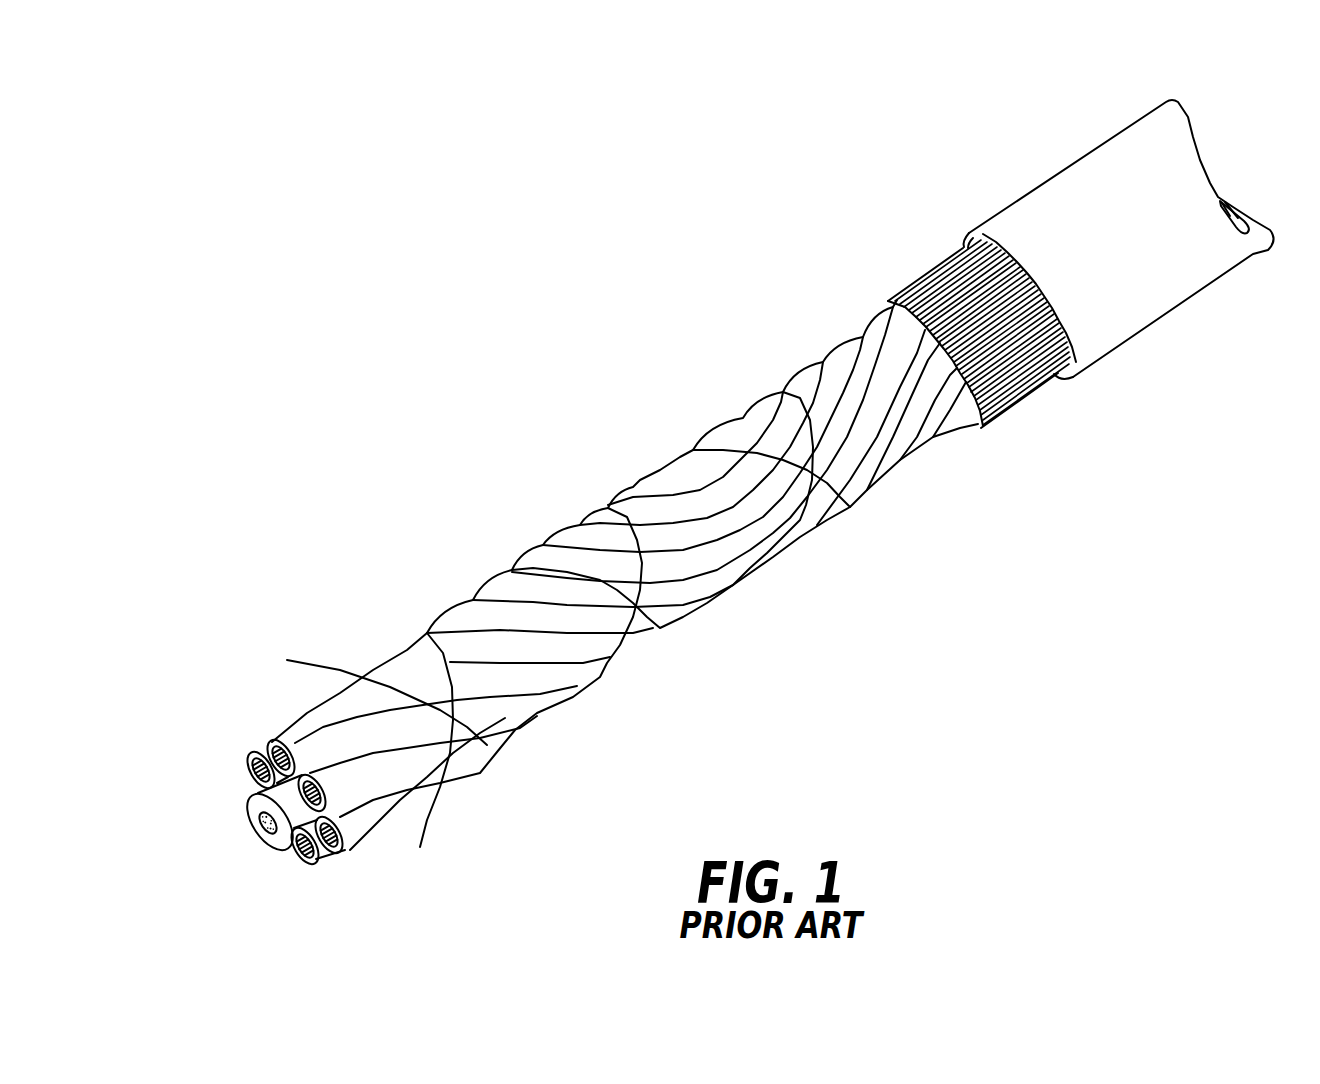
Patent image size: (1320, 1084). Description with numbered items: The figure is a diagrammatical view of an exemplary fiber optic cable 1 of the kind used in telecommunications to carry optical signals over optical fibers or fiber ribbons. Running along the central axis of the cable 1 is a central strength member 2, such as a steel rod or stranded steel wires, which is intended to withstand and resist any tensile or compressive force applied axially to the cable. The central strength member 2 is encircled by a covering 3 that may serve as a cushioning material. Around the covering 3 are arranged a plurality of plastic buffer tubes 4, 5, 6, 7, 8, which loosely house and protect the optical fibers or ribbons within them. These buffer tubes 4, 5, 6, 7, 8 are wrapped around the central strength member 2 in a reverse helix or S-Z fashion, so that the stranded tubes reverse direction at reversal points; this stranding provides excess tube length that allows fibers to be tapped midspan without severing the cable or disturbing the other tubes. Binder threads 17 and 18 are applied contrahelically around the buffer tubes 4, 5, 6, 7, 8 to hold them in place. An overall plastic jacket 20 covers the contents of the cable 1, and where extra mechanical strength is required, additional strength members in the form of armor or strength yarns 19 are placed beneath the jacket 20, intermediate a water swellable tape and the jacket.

The cable 1 is at (995, 203).
The central strength member 2 is at (262, 840).
The covering 3 is at (250, 802).
The plastic buffer tube 4 is at (322, 860).
The plastic buffer tube 5 is at (347, 840).
The plastic buffer tube 6 is at (355, 788).
The plastic buffer tube 7 is at (322, 758).
The plastic buffer tube 8 is at (260, 752).
The binder thread 17 is at (287, 660).
The binder thread 18 is at (440, 805).
The armor or strength yarns 19 is at (897, 300).
The plastic jacket 20 is at (1060, 380).